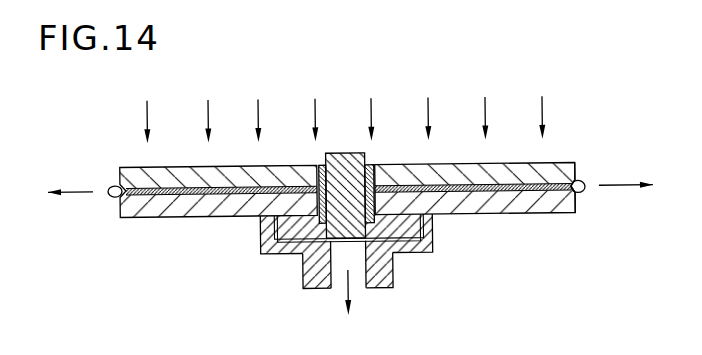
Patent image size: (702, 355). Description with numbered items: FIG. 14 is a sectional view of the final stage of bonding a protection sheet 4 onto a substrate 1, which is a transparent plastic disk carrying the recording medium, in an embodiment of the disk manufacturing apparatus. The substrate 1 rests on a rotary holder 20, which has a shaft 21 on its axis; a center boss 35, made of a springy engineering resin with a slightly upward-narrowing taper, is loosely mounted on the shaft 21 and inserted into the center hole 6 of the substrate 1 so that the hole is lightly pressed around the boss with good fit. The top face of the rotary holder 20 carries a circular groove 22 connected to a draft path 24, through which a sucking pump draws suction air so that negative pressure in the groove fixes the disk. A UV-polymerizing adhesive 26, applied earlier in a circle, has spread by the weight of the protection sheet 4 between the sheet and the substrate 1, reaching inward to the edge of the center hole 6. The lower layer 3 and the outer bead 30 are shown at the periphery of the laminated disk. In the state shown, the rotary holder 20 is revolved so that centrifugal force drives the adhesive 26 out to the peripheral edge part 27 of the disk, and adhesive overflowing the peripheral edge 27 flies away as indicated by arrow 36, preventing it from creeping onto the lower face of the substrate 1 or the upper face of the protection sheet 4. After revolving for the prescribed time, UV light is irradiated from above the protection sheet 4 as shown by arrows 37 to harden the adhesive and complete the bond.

The substrate 1 is at (578, 207).
The lower plate 3 is at (527, 194).
The protection sheet 4 is at (144, 172).
The center hole 6 is at (393, 263).
The rotary holder 20 is at (391, 282).
The shaft 21 is at (340, 160).
The circular groove 22 is at (432, 240).
The draft path 24 is at (279, 253).
The UV-polymerizing adhesive 26 is at (428, 185).
The peripheral edge part 27 is at (576, 165).
The edge bead 30 is at (581, 183).
The center boss 35 is at (375, 160).
The arrow 36 is at (73, 190).
The arrows 37 is at (544, 108).